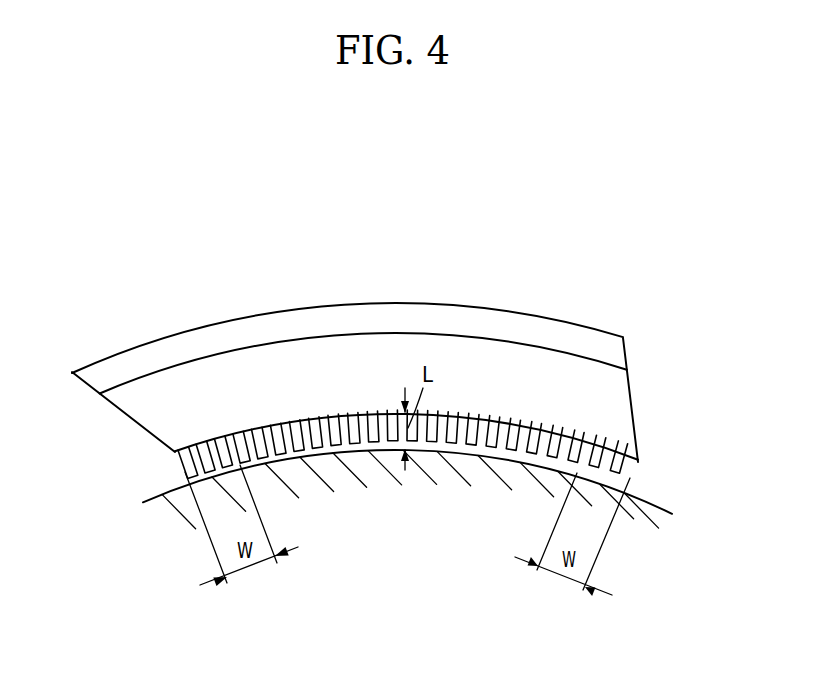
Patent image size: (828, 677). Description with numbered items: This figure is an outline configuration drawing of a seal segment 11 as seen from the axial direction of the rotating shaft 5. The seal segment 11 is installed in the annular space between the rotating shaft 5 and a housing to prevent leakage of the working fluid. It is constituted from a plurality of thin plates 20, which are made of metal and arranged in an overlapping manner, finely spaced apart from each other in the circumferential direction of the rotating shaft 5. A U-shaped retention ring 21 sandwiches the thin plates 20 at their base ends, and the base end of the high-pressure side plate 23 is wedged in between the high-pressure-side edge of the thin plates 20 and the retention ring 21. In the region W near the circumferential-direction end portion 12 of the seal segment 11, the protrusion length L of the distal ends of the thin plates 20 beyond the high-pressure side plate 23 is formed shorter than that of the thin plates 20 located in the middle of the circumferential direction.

The seal segment 11 is at (648, 270).
The circumferential-direction end portion 12 is at (632, 398).
The retention ring 21 is at (580, 336).
The high-pressure side plate 23 is at (615, 423).
The thin plates 20 is at (638, 462).
The rotating shaft 5 is at (487, 478).